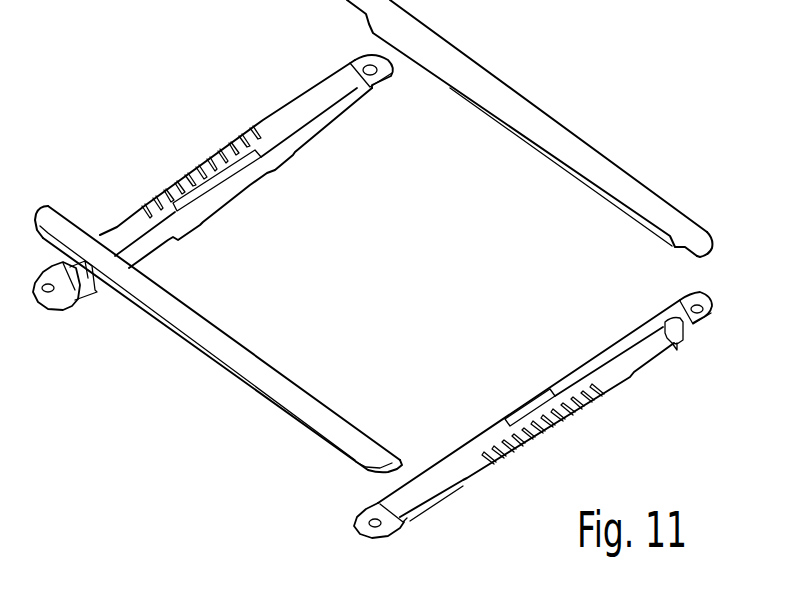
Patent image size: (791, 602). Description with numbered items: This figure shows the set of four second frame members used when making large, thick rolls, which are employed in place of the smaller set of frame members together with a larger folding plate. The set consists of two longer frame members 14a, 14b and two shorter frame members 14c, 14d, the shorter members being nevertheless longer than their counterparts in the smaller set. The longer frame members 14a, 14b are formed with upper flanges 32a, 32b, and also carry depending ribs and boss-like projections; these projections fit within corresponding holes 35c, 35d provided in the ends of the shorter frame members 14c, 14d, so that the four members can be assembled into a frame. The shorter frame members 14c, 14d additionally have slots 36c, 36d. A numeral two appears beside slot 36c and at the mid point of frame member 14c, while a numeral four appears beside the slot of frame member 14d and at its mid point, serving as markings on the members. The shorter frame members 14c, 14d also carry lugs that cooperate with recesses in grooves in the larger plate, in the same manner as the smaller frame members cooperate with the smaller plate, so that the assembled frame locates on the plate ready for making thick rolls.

The frame member 14a is at (529, 128).
The frame member 14b is at (218, 339).
The frame member 14c is at (618, 352).
The frame member 14d is at (297, 114).
The upper flange 32a is at (532, 110).
The upper flange 32b is at (198, 322).
The hole 35c is at (372, 531).
The hole 35d is at (382, 78).
The slot 36c is at (682, 338).
The slot 36d is at (87, 273).